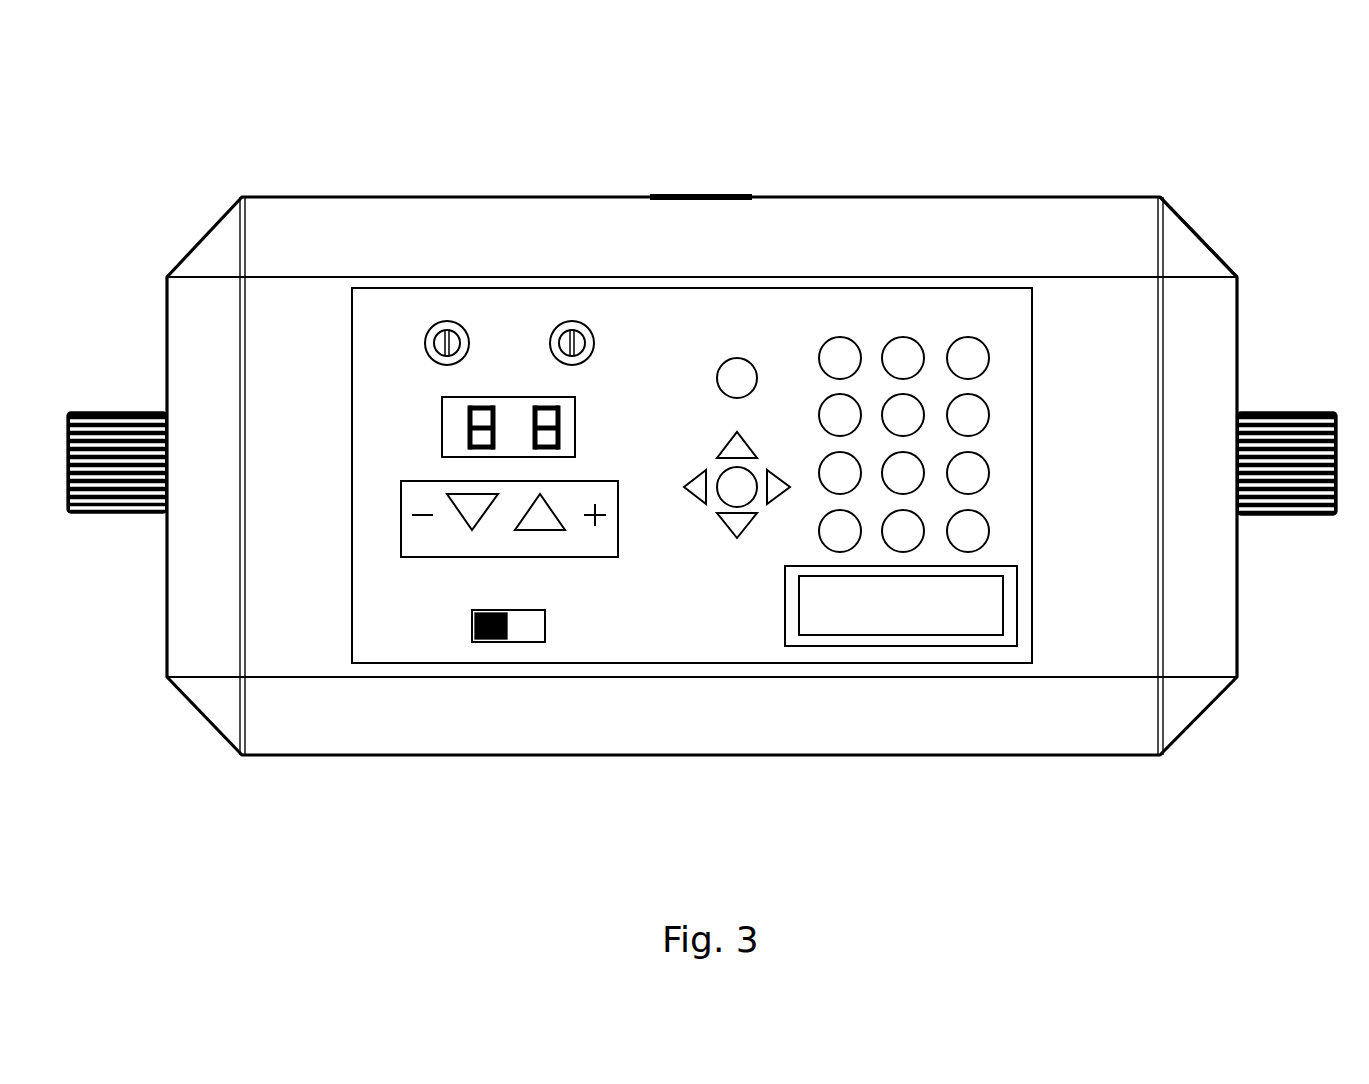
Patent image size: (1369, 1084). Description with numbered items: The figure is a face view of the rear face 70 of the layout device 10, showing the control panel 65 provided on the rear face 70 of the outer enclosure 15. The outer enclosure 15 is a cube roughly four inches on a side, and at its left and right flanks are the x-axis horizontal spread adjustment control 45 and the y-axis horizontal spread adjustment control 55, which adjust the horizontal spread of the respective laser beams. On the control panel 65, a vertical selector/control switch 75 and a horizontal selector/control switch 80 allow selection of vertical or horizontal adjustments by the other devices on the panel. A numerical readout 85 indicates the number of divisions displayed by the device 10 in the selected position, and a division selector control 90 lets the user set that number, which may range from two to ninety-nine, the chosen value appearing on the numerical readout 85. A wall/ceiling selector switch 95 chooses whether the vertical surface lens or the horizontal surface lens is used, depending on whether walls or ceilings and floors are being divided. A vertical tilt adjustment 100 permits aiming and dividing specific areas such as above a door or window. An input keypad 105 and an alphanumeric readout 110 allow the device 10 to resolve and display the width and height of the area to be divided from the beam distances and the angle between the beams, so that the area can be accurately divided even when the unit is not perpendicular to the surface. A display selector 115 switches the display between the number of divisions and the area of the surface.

The layout device 10 is at (334, 172).
The outer enclosure 15 is at (1222, 287).
The x-axis horizontal spread adjustment control 45 is at (167, 407).
The y-axis horizontal spread adjustment control 55 is at (1250, 517).
The control panel 65 is at (916, 287).
The rear face 70 is at (711, 158).
The vertical selector/control switch 75 is at (447, 343).
The horizontal selector/control switch 80 is at (572, 343).
The numerical readout 85 is at (458, 420).
The division selector control 90 is at (417, 540).
The wall/ceiling selector switch 95 is at (497, 645).
The vertical tilt adjustment 100 is at (737, 376).
The input keypad 105 is at (815, 175).
The alphanumeric readout 110 is at (958, 605).
The display selector 115 is at (733, 490).